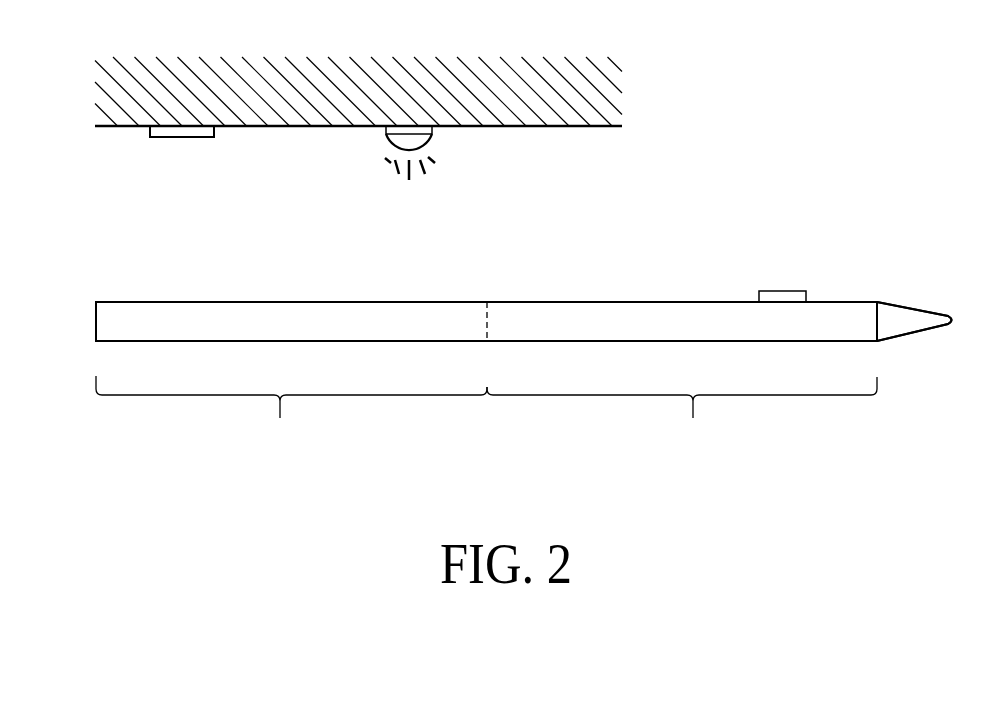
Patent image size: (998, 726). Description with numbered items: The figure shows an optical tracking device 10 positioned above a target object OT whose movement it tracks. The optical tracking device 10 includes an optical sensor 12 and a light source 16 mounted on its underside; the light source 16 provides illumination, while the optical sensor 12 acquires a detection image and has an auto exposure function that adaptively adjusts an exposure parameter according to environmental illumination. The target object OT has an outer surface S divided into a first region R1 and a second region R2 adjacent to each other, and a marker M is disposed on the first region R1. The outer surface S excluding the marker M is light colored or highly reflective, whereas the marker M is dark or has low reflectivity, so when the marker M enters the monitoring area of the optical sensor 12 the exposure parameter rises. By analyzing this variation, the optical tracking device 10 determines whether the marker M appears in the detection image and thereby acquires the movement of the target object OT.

The optical tracking device 10 is at (358, 91).
The optical sensor 12 is at (183, 137).
The light source 16 is at (392, 142).
The outer surface S is at (543, 300).
The marker M is at (782, 297).
The target object OT is at (902, 315).
The first region R1 is at (291, 416).
The second region R2 is at (682, 415).